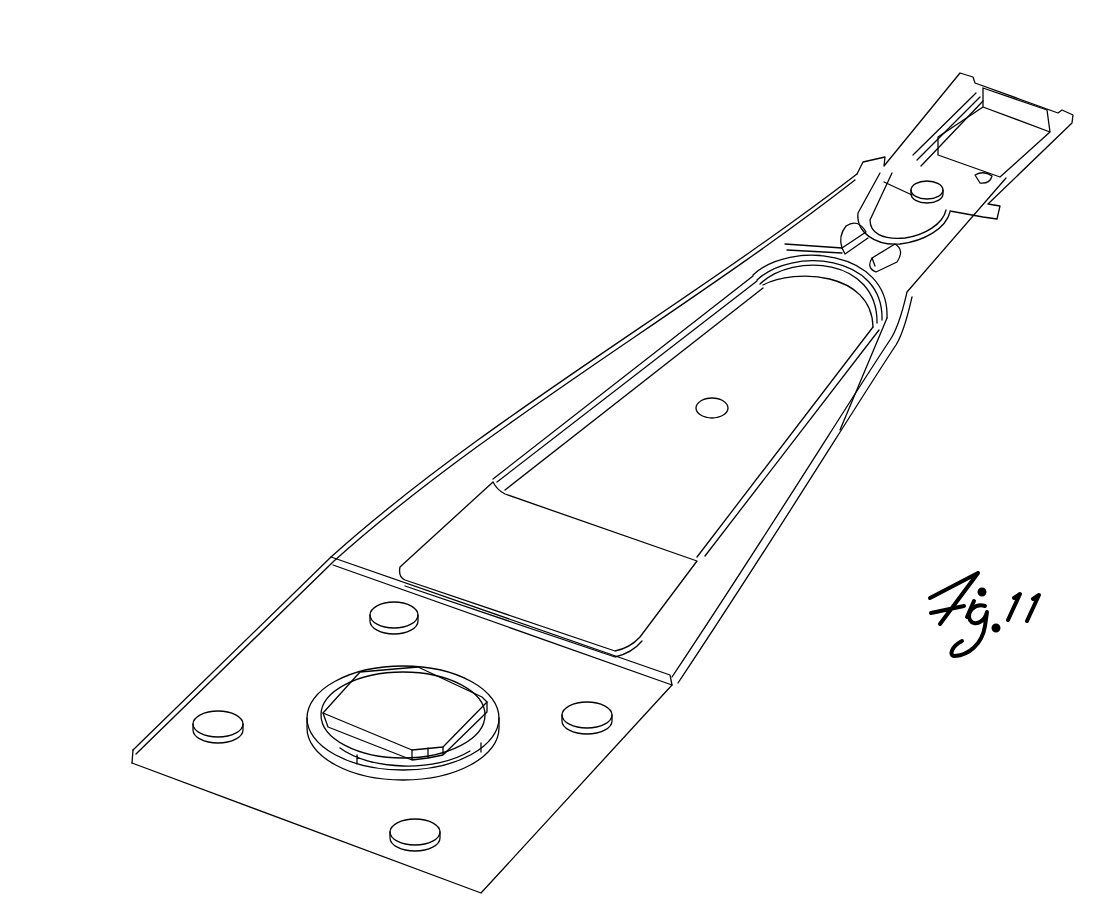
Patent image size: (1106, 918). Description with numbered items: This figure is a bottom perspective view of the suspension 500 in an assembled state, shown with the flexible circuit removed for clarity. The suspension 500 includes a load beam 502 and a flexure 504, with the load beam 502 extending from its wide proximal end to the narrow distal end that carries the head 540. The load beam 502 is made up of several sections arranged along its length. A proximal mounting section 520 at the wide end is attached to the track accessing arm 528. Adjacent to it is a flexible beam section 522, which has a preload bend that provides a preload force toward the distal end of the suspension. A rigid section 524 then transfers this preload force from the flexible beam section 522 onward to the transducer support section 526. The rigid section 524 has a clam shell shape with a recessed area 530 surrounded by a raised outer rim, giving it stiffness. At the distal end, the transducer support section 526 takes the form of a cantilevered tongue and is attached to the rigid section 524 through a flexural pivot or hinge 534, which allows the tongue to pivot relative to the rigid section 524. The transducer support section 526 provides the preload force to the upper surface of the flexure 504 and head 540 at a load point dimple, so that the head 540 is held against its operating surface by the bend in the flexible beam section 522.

The suspension 500 is at (605, 461).
The load beam 502 is at (584, 468).
The flexure 504 is at (962, 124).
The proximal mounting section 520 is at (280, 602).
The flexible beam section 522 is at (378, 508).
The rigid section 524 is at (627, 333).
The transducer support section 526 is at (862, 200).
The track accessing arm 528 is at (258, 653).
The recessed area 530 is at (800, 385).
The flexural pivot or hinge 534 is at (888, 252).
The head 540 is at (1013, 107).